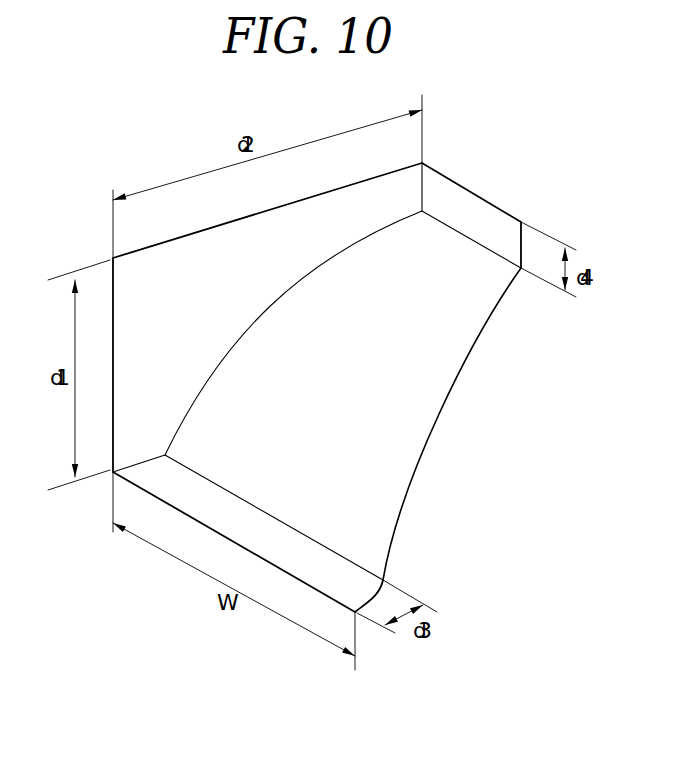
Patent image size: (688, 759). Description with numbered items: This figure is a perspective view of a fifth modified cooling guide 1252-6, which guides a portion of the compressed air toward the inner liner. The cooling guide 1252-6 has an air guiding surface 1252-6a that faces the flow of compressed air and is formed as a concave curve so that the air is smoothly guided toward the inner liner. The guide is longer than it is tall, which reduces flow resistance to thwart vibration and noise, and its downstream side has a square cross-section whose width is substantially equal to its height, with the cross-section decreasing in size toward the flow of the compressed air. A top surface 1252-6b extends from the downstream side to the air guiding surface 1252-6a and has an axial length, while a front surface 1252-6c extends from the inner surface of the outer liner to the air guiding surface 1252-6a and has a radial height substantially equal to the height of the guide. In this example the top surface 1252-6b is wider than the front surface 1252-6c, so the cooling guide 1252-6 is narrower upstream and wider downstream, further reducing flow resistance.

The cooling guide 1252-6 is at (516, 100).
The air guiding surface 1252-6a is at (375, 392).
The top surface 1252-6b is at (285, 547).
The front surface 1252-6c is at (472, 222).